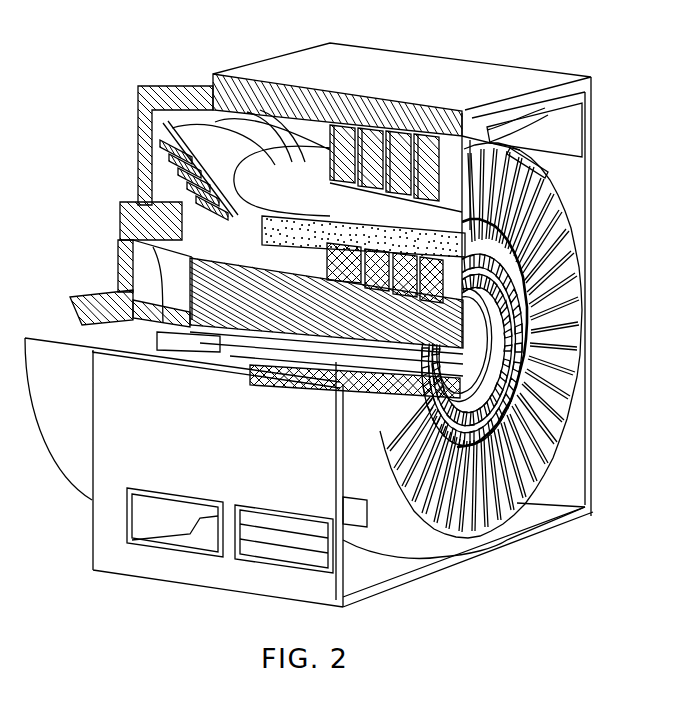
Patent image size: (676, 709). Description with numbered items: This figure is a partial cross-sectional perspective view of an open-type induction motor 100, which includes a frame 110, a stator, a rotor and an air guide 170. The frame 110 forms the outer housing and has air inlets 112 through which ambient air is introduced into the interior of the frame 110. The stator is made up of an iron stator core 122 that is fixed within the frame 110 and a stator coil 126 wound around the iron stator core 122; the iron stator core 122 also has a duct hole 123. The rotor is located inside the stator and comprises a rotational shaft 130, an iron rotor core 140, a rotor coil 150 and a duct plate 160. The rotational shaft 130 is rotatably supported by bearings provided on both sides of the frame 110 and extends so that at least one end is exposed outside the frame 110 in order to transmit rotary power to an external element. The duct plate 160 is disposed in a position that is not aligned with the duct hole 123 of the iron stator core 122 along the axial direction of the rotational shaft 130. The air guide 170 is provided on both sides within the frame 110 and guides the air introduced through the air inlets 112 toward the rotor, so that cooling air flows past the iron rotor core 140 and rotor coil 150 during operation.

The open-type induction motor 100 is at (362, 26).
The frame 110 is at (213, 87).
The air inlets 112 is at (141, 176).
The iron stator core 122 is at (428, 143).
The duct hole 123 is at (493, 137).
The stator coil 126 is at (256, 76).
The rotational shaft 130 is at (119, 261).
The iron rotor core 140 is at (548, 210).
The rotor coil 150 is at (350, 112).
The duct plate 160 is at (545, 297).
The air guide 170 is at (138, 111).